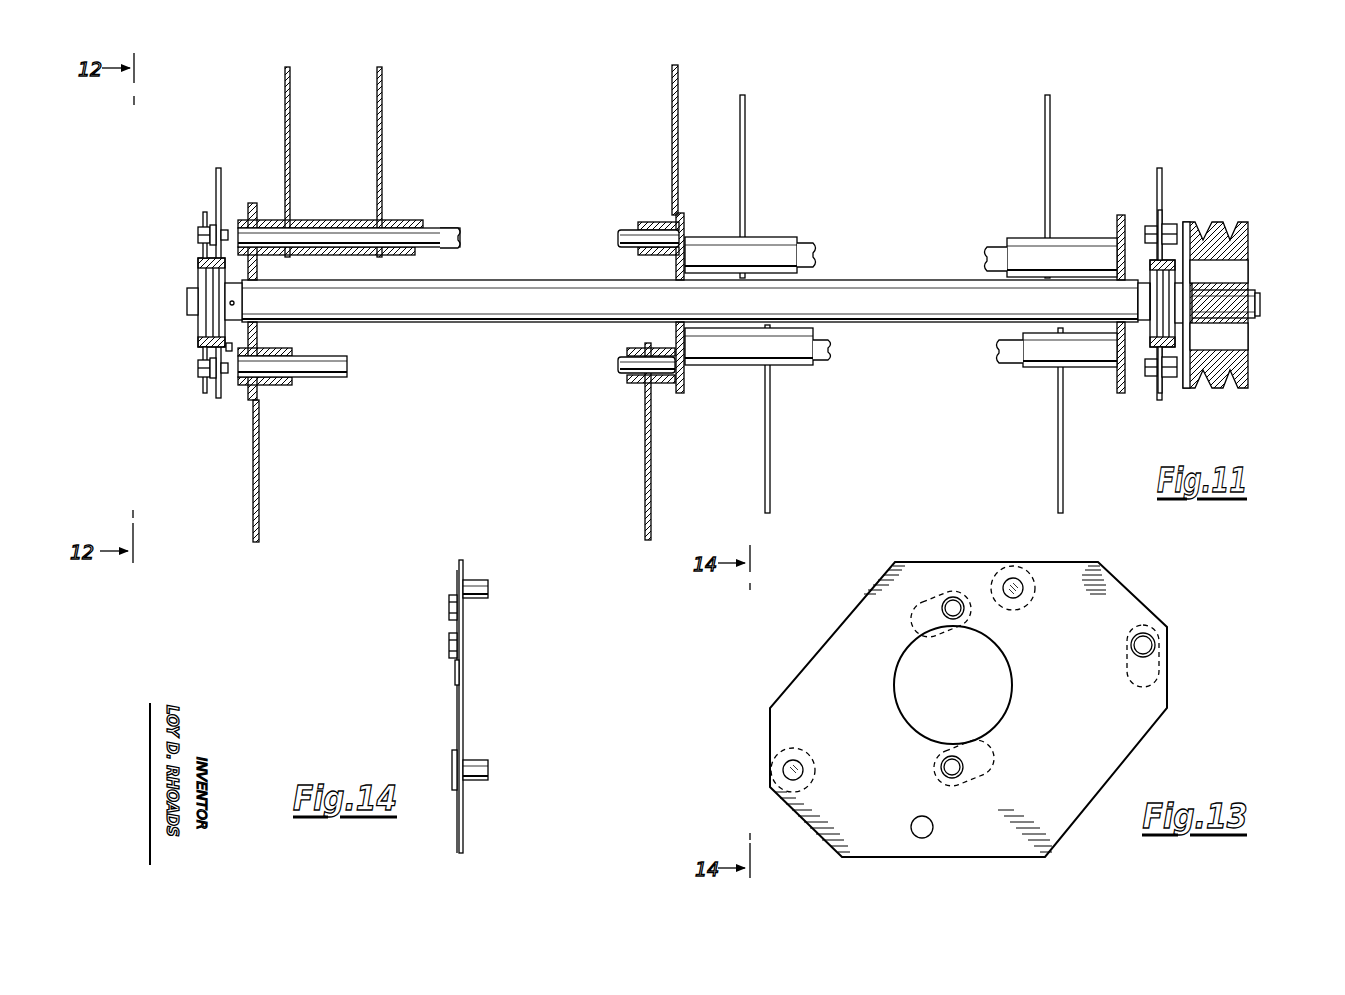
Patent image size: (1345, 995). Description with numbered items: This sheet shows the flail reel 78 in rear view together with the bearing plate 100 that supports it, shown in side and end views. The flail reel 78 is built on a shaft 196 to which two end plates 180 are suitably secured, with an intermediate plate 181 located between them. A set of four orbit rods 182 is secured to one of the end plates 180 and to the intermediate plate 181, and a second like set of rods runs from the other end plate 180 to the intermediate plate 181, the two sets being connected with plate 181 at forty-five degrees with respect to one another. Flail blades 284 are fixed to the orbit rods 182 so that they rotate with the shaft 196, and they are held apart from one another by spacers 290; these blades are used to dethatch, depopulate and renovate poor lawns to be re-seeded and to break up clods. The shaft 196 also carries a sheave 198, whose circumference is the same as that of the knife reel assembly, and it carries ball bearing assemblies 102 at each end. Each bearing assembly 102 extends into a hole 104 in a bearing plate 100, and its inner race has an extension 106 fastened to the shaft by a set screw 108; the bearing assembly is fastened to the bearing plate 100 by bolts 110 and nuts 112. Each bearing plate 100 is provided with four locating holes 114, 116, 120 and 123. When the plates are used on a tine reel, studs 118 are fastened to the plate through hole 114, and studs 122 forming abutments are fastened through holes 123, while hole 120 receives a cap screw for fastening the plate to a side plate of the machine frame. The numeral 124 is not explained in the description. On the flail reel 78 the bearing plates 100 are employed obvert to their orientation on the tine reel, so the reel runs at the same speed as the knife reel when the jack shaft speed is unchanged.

In FIG. 11, the flail reel 78 is at (527, 329).
In FIG. 11, the bearing plate 100 is at (216, 188).
In FIG. 14, the bearing plate 100 is at (458, 716).
In FIG. 13, the bearing plate 100 is at (808, 669).
In FIG. 11, the ball bearing assembly 102 is at (200, 269).
In FIG. 11, the hole 104 is at (1150, 350).
In FIG. 13, the hole 104 is at (1005, 676).
In FIG. 11, the extension 106 is at (236, 352).
In FIG. 11, the set screw 108 is at (235, 303).
In FIG. 11, the bolt 110 is at (198, 234).
In FIG. 11, the nut 112 is at (223, 226).
In FIG. 13, the locating hole 114 is at (1016, 580).
In FIG. 13, the locating hole 116 is at (923, 836).
In FIG. 14, the stud 118 is at (488, 596).
In FIG. 13, the stud 118 is at (1020, 594).
In FIG. 14, the hole 120 is at (462, 659).
In FIG. 14, the stud 122 is at (488, 773).
In FIG. 13, the stud 122 is at (790, 771).
In FIG. 14, the hole 123 is at (463, 750).
In FIG. 14, the nut 124 is at (463, 646).
In FIG. 13, the nut 124 is at (1152, 640).
In FIG. 11, the end plate 180 is at (249, 401).
In FIG. 11, the intermediate plate 181 is at (684, 215).
In FIG. 11, the orbit rod 182 is at (452, 238).
In FIG. 11, the shaft 196 is at (1262, 294).
In FIG. 11, the sheave 198 is at (1236, 268).
In FIG. 11, the flail blade 284 is at (285, 101).
In FIG. 11, the spacer 290 is at (318, 221).